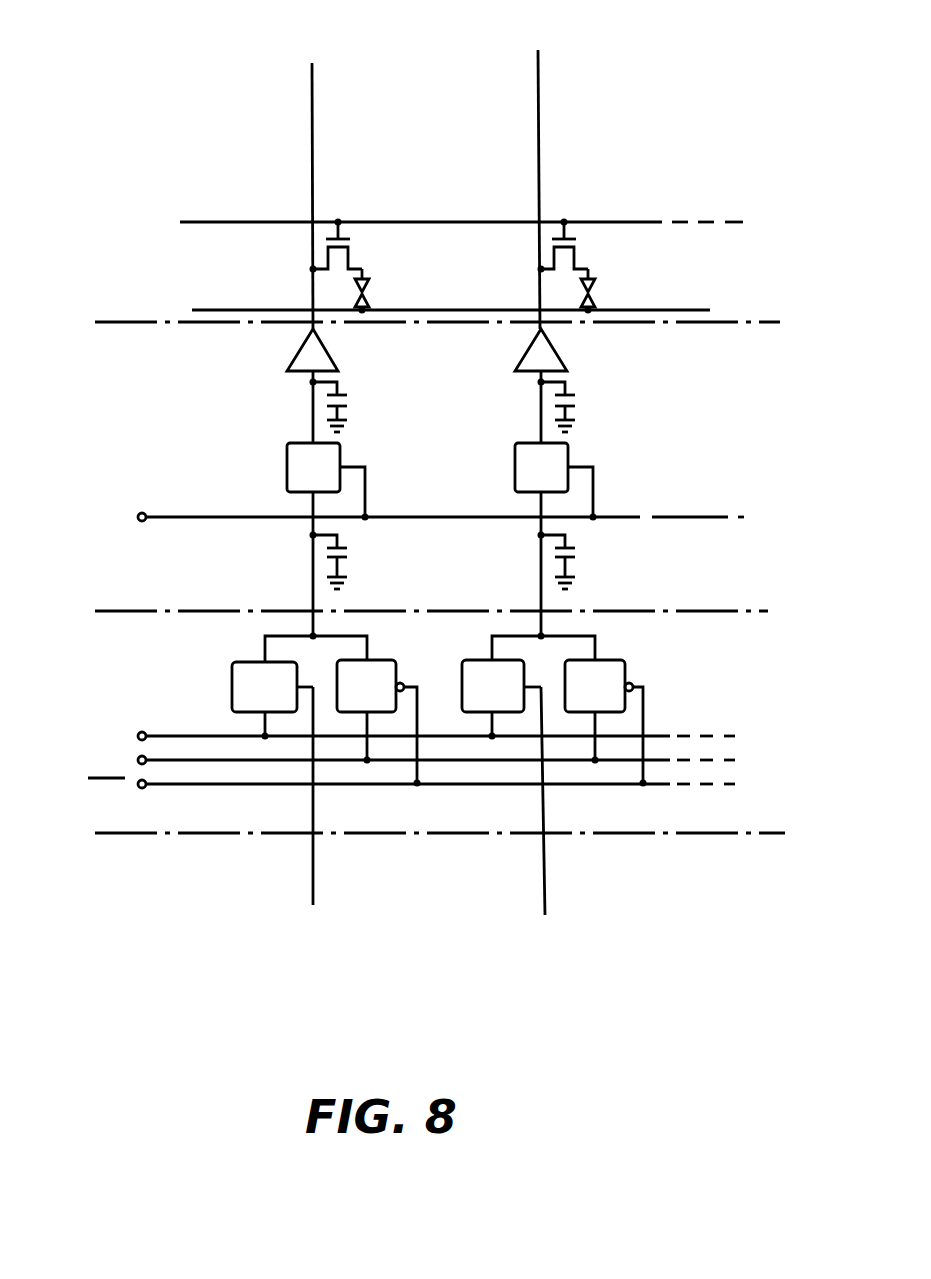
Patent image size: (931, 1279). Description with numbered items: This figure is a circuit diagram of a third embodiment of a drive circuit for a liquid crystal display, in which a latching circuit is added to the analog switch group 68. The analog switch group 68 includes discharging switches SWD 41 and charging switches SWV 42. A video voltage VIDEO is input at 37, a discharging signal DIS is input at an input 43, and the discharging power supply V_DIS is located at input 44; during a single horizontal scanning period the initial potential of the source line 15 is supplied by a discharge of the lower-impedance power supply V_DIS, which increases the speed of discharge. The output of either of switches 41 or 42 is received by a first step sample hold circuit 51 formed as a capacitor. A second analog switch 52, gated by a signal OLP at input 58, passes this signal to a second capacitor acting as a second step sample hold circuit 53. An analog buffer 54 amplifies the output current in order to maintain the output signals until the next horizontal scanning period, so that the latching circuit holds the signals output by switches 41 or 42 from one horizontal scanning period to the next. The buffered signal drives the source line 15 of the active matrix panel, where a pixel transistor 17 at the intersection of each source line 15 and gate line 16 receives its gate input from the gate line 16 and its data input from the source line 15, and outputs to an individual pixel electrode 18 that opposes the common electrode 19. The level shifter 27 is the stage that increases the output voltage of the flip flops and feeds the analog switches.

The source line 15 is at (311, 65).
The gate line 16 is at (190, 222).
The pixel transistor 17 is at (349, 242).
The pixel electrode 18 is at (365, 281).
The common electrode 19 is at (200, 310).
The level shifter 27 is at (218, 903).
The video voltage input 37 is at (147, 734).
The discharging switch SWD 41 is at (232, 665).
The charging switch SWV 42 is at (390, 665).
The discharging signal input 43 is at (143, 788).
The discharging power supply input 44 is at (147, 758).
The first step sample hold circuit 51 is at (348, 555).
The second analog switch 52 is at (333, 462).
The second step sample hold circuit 53 is at (348, 403).
The analog buffer 54 is at (328, 352).
The OLP input 58 is at (142, 521).
The analog switch group 68 is at (735, 692).